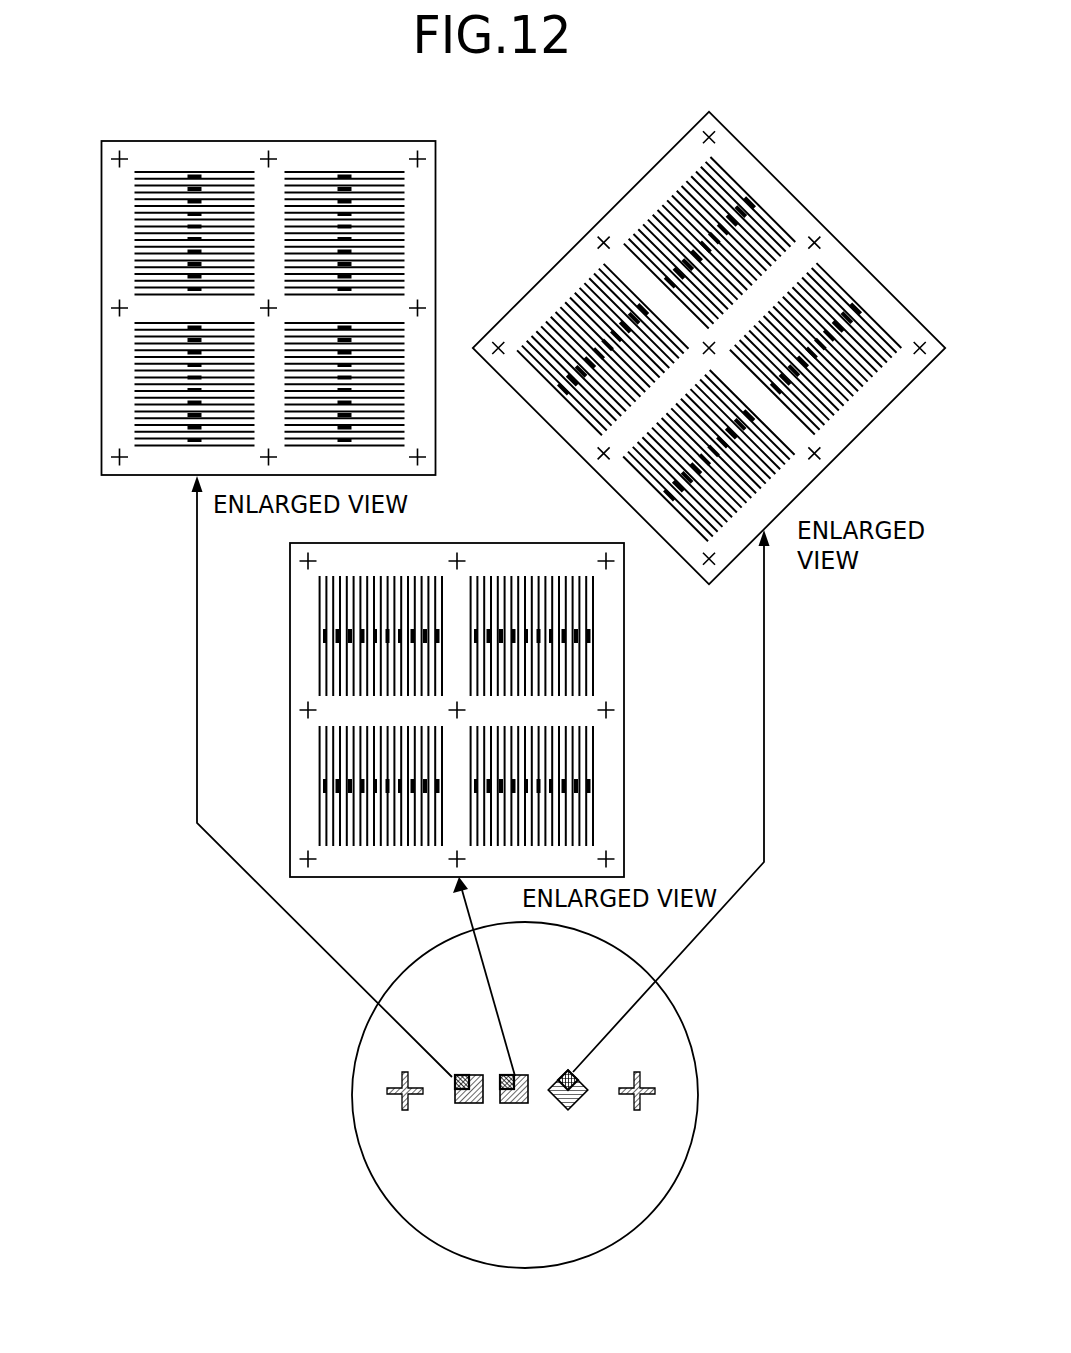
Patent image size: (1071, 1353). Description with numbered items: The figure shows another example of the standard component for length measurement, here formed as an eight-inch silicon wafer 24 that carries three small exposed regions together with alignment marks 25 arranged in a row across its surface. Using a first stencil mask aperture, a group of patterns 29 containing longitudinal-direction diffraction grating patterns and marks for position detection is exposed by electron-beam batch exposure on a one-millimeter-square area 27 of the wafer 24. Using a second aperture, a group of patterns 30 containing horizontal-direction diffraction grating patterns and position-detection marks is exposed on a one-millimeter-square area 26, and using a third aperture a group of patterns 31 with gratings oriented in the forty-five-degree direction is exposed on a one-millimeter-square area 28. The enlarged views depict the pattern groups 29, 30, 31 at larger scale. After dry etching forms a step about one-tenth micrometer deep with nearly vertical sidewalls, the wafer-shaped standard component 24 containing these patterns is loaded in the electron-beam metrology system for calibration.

The wafer 24 is at (673, 993).
The alignment mark 25 is at (645, 1086).
The area 26 is at (468, 1104).
The area 27 is at (520, 1104).
The area 28 is at (578, 1100).
The group of patterns 29 is at (322, 677).
The group of patterns 30 is at (402, 234).
The group of patterns 31 is at (760, 208).